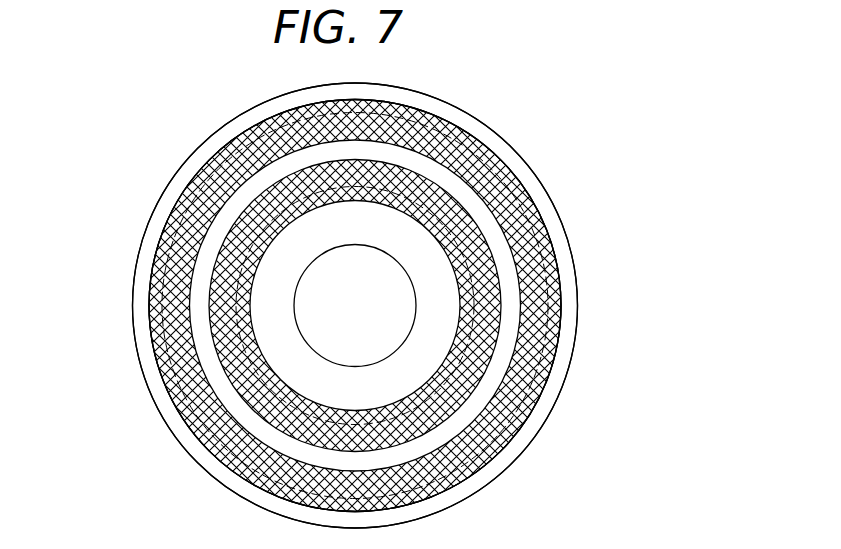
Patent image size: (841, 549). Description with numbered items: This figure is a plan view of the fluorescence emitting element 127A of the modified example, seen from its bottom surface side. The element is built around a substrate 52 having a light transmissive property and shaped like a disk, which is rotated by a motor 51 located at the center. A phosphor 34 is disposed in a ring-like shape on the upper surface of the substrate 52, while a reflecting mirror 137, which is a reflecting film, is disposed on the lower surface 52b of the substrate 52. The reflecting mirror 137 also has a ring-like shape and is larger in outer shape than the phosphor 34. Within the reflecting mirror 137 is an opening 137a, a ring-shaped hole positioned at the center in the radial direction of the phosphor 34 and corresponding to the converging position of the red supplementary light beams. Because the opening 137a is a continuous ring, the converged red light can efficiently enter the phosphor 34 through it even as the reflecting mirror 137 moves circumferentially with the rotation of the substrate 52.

The fluorescence emitting element 127A is at (554, 146).
The motor 51 is at (401, 291).
The substrate 52 is at (578, 311).
The lower surface 52b is at (555, 378).
The reflecting mirror 137 is at (152, 348).
The opening 137a is at (207, 324).
The phosphor 34 is at (192, 413).